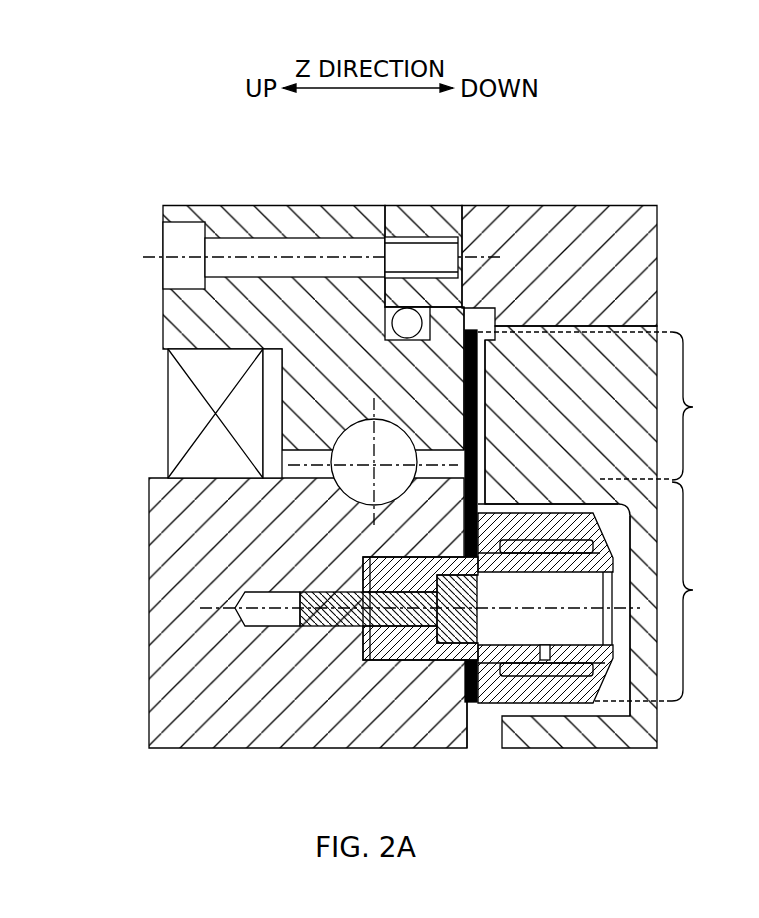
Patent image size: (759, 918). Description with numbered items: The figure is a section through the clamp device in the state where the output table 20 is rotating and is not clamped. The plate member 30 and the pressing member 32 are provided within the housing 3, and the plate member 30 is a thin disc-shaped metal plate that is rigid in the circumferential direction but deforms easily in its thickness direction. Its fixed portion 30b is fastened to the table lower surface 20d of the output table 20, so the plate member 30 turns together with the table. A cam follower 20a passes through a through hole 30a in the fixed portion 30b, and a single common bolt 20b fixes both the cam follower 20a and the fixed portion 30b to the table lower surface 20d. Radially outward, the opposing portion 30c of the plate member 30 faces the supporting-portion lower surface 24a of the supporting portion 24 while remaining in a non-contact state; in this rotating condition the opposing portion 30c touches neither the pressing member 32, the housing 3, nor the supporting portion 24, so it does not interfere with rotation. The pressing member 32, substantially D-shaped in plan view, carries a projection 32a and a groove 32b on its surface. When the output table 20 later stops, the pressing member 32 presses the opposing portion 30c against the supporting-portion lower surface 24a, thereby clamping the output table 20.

The housing 3 is at (430, 218).
The output table 20 is at (165, 510).
The cam follower 20a is at (362, 647).
The bolt 20b is at (343, 588).
The table lower surface 20d is at (469, 727).
The supporting portion 24 is at (330, 322).
The supporting-portion lower surface 24a is at (477, 308).
The plate member 30 is at (480, 329).
The through hole 30a is at (428, 662).
The fixed portion 30b is at (671, 591).
The opposing portion 30c is at (673, 406).
The pressing member 32 is at (617, 358).
The projection 32a is at (497, 357).
The groove 32b is at (620, 503).